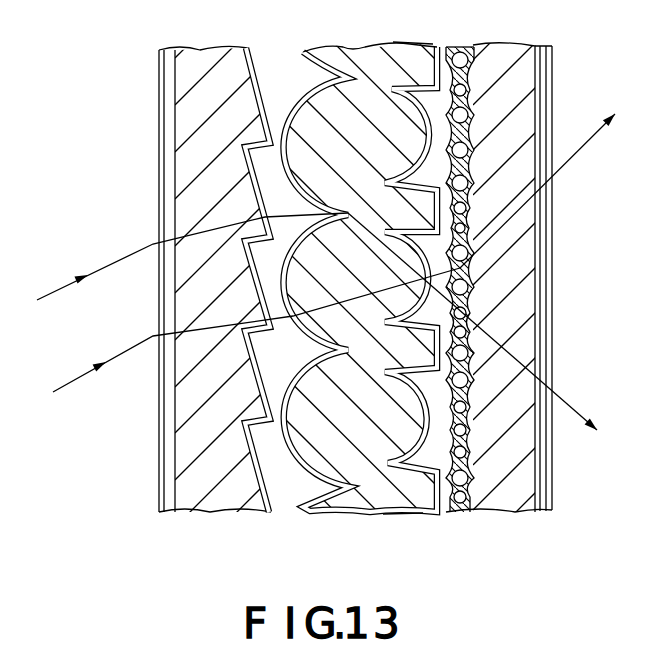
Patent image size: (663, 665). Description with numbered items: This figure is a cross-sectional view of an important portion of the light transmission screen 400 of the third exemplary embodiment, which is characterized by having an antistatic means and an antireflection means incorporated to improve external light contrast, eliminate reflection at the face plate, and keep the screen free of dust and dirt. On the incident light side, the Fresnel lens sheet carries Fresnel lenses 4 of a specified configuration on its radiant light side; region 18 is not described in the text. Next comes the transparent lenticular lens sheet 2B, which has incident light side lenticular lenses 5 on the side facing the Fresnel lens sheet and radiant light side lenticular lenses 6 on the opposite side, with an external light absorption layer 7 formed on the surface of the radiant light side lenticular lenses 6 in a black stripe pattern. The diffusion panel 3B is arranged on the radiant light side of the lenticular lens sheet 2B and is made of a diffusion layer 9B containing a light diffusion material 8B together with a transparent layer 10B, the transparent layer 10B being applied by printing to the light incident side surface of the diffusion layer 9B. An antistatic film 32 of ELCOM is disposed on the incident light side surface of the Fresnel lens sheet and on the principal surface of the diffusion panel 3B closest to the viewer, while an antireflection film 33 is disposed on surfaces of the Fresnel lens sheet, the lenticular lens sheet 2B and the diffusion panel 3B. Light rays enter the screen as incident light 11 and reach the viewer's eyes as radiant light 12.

The light transmission screen 400 is at (555, 32).
The lenticular lens sheet 2B is at (372, 495).
The diffusion panel 3B is at (515, 302).
The Fresnel lenses 4 is at (252, 490).
The incident light side lenticular lenses 5 is at (294, 452).
The radiant light side lenticular lenses 6 is at (433, 397).
The external light absorption layer 7 is at (423, 508).
The light diffusion material 8B is at (470, 510).
The diffusion layer 9B is at (560, 297).
The transparent layer 10B is at (508, 510).
The incident light 11 is at (238, 310).
The radiant light 12 is at (490, 269).
The substrate 18 is at (217, 495).
The antistatic film 32 is at (170, 512).
The antireflection film 33 is at (163, 447).